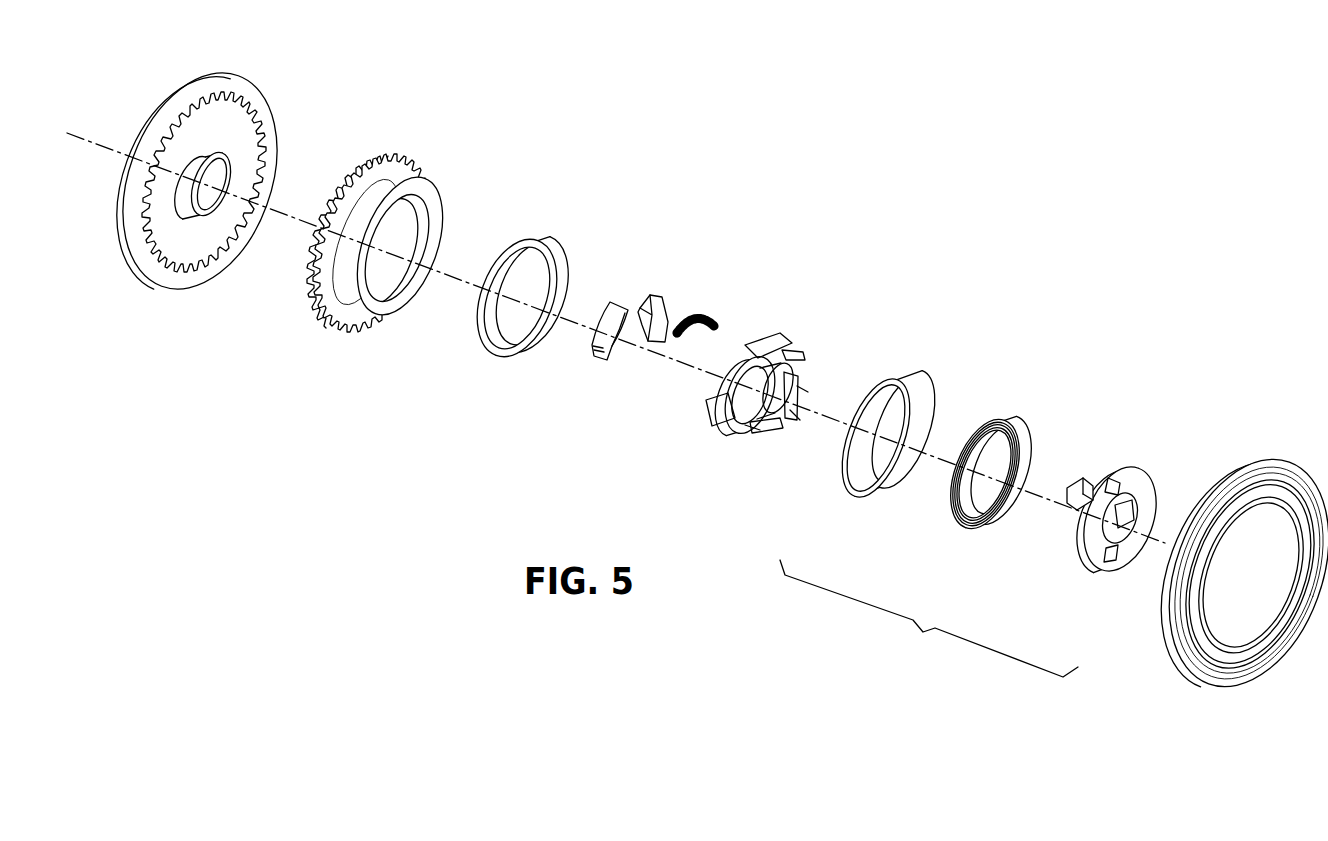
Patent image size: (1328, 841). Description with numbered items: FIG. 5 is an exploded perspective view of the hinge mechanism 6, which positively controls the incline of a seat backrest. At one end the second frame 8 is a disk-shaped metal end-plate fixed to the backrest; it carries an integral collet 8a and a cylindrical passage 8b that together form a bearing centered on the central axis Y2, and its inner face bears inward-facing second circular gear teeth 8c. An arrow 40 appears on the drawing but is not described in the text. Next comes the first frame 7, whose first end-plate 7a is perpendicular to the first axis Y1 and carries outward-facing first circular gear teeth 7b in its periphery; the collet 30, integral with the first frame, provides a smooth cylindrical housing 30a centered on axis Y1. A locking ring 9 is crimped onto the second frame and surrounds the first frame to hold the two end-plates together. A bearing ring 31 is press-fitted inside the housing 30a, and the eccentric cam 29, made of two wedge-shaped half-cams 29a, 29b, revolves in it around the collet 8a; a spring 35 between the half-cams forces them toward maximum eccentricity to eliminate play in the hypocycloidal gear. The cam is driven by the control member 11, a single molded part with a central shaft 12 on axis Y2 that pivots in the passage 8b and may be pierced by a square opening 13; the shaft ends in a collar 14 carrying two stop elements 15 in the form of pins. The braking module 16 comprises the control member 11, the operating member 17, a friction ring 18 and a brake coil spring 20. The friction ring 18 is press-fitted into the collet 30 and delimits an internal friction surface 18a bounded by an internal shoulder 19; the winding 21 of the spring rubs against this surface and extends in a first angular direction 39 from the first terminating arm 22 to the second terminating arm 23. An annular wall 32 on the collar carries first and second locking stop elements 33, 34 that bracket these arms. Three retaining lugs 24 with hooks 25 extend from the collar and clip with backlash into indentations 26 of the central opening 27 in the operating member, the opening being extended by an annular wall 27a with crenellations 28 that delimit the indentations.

The hinge mechanism 6 is at (847, 165).
The first frame 7 is at (385, 255).
The first end-plate 7a is at (326, 320).
The first circular gear teeth 7b is at (390, 156).
The second frame 8 is at (204, 205).
The collet 8a is at (201, 154).
The cylindrical passage 8b is at (214, 181).
The second circular gear teeth 8c is at (195, 265).
The locking ring 9 is at (1257, 462).
The control member 11 is at (773, 387).
The central shaft 12 is at (735, 357).
The opening 13 is at (765, 433).
The collar 14 is at (767, 343).
The stop element 15 is at (715, 418).
The braking module 16 is at (929, 618).
The operating member 17 is at (1118, 535).
The friction ring 18 is at (895, 461).
The friction surface 18a is at (925, 415).
The internal shoulder 19 is at (897, 465).
The brake coil spring 20 is at (996, 484).
The winding 21 is at (1010, 418).
The first terminating arm 22 is at (1005, 507).
The second terminating arm 23 is at (1006, 500).
The retaining lugs 24 is at (782, 358).
The hook 25 is at (785, 375).
The indentations 26 is at (1107, 493).
The central opening 27 is at (1144, 536).
The annular wall 27a is at (1122, 528).
The crenellations 28 is at (1083, 488).
The eccentric cam 29 is at (624, 344).
The first half-cam 29a is at (660, 310).
The second half-cam 29b is at (615, 347).
The collet 30 is at (410, 270).
The cylindrical housing 30a is at (427, 222).
The ring 31 is at (528, 243).
The annular wall 32 is at (797, 390).
The first locking stop element 33 is at (793, 417).
The second locking stop element 34 is at (747, 428).
The spring 35 is at (697, 333).
The first angular direction 39 is at (113, 165).
The rotation direction 40 is at (228, 52).
The first axis Y1 is at (454, 282).
The central axis Y2 is at (100, 140).